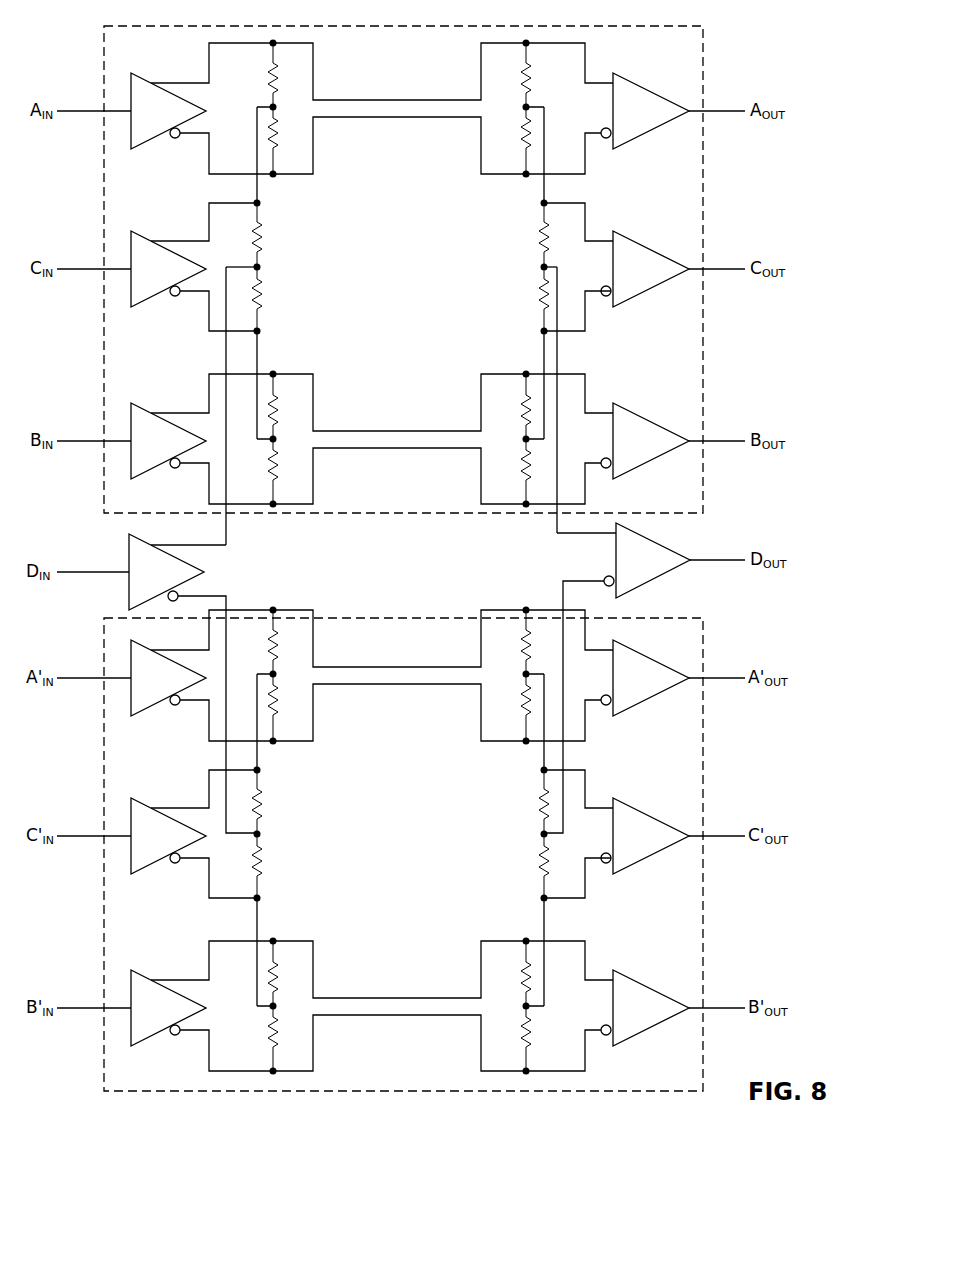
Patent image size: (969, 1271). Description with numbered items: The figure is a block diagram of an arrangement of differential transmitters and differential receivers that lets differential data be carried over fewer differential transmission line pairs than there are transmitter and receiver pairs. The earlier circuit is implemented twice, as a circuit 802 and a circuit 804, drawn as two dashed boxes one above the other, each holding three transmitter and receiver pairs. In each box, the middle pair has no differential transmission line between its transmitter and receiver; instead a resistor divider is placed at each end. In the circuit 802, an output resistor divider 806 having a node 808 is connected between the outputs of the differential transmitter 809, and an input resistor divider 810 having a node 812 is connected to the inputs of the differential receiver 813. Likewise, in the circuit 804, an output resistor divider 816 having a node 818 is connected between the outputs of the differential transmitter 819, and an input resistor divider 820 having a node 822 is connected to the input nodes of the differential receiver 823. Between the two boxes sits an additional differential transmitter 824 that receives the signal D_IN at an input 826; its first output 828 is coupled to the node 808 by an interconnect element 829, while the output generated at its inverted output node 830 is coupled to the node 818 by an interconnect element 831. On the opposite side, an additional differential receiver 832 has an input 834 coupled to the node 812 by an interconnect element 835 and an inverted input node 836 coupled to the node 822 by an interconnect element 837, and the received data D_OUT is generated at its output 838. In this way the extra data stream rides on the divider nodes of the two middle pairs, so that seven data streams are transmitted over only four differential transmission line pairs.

The circuit 802 is at (703, 66).
The circuit 804 is at (703, 631).
The output resistor divider 806 is at (270, 231).
The node 808 is at (257, 267).
The differential transmitter 809 is at (131, 240).
The input resistor divider 810 is at (544, 229).
The node 812 is at (545, 267).
The differential receiver 813 is at (632, 242).
The output resistor divider 816 is at (260, 797).
The node 818 is at (257, 834).
The differential transmitter 819 is at (131, 805).
The input resistor divider 820 is at (544, 797).
The node 822 is at (544, 834).
The differential receiver 823 is at (635, 808).
The additional differential transmitter 824 is at (129, 548).
The input 826 is at (122, 578).
The first output 828 is at (150, 544).
The interconnect element 829 is at (228, 545).
The inverted output node 830 is at (173, 602).
The interconnect element 831 is at (227, 592).
The additional differential receiver 832 is at (655, 542).
The input 834 is at (615, 541).
The interconnect element 835 is at (557, 524).
The inverted input node 836 is at (605, 586).
The interconnect element 837 is at (563, 583).
The output 838 is at (692, 560).